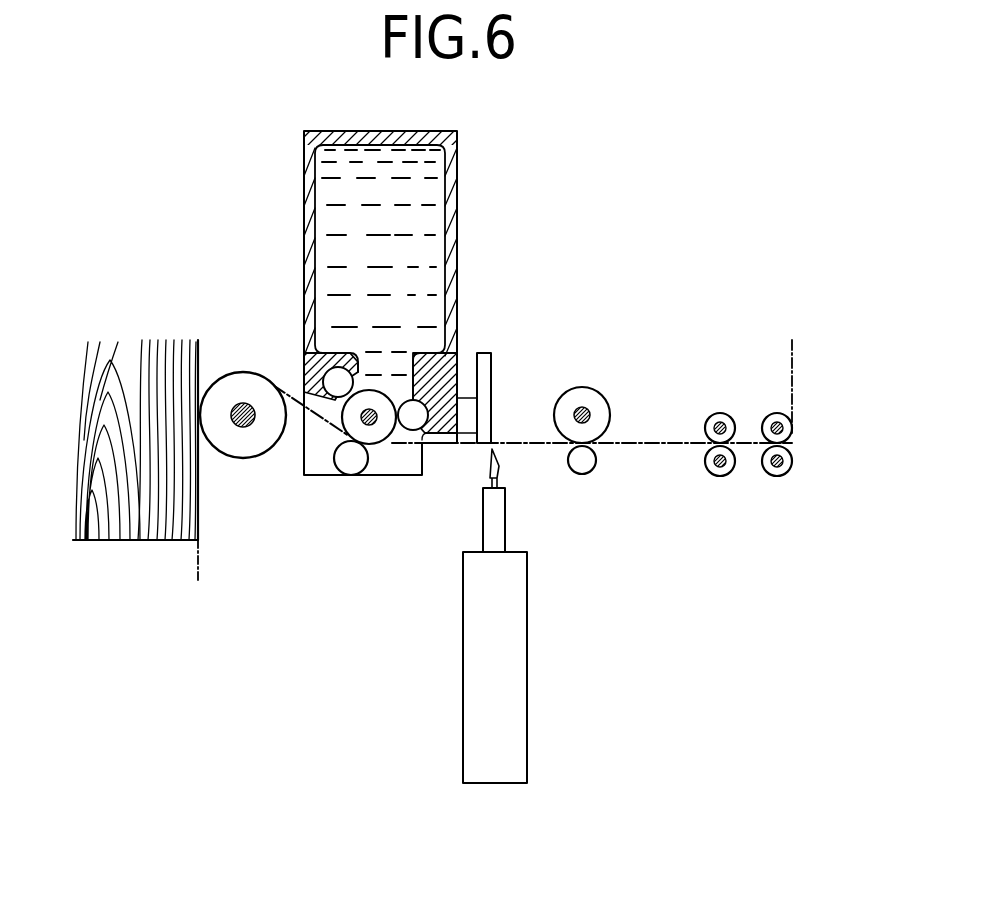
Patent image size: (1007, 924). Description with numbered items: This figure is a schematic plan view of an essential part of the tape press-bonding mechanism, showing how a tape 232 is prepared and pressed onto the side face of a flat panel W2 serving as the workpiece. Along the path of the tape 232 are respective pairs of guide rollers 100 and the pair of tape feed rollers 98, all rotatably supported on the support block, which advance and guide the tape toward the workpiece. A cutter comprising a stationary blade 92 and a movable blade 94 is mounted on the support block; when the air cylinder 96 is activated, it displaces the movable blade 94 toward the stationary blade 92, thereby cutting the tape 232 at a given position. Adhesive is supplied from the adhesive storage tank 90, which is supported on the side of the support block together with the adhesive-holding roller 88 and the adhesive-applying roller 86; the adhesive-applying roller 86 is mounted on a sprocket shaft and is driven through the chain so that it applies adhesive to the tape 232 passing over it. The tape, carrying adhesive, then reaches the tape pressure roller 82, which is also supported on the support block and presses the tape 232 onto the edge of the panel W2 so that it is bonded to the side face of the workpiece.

The tape pressure roller 82 is at (251, 443).
The adhesive-applying roller 86 is at (375, 435).
The adhesive-holding roller 88 is at (352, 462).
The adhesive storage tank 90 is at (433, 215).
The stationary blade 92 is at (485, 375).
The movable blade 94 is at (498, 470).
The air cylinder 96 is at (475, 597).
The tape feed rollers 98 is at (583, 395).
The guide rollers 100 is at (721, 413).
The tape 232 is at (797, 388).
The flat panel W2 is at (157, 527).